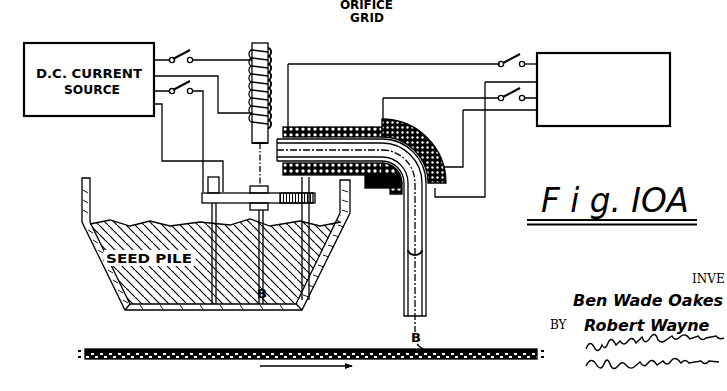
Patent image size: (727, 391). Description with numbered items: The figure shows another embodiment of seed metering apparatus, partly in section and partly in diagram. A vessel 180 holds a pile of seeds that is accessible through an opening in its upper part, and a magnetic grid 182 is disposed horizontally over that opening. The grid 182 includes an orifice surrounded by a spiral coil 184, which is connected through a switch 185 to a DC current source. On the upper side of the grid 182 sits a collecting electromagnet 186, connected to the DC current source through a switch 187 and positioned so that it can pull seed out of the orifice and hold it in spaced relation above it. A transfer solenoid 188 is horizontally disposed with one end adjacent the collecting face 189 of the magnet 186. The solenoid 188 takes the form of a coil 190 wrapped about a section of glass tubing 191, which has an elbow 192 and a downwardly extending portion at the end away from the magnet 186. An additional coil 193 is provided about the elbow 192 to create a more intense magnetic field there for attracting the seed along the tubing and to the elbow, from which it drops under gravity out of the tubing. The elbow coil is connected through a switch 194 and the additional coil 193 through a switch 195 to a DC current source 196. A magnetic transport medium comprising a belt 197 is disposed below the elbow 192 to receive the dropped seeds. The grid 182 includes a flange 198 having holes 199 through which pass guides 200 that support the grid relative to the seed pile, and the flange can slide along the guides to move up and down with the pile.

The vessel 180 is at (306, 299).
The magnetic grid 182 is at (249, 187).
The spiral coil 184 is at (310, 258).
The switch 185 is at (186, 96).
The collecting electromagnet 186 is at (250, 50).
The switch 187 is at (181, 50).
The transfer solenoid 188 is at (380, 64).
The collecting face 189 is at (252, 143).
The coil 190 is at (359, 125).
The glass tubing 191 is at (317, 141).
The elbow 192 is at (437, 130).
The additional coil 193 is at (297, 126).
The switch 194 is at (512, 96).
The switch 195 is at (511, 58).
The DC current source 196 is at (635, 62).
The belt 197 is at (484, 349).
The flange 198 is at (205, 200).
The holes 199 is at (207, 188).
The guides 200 is at (316, 264).